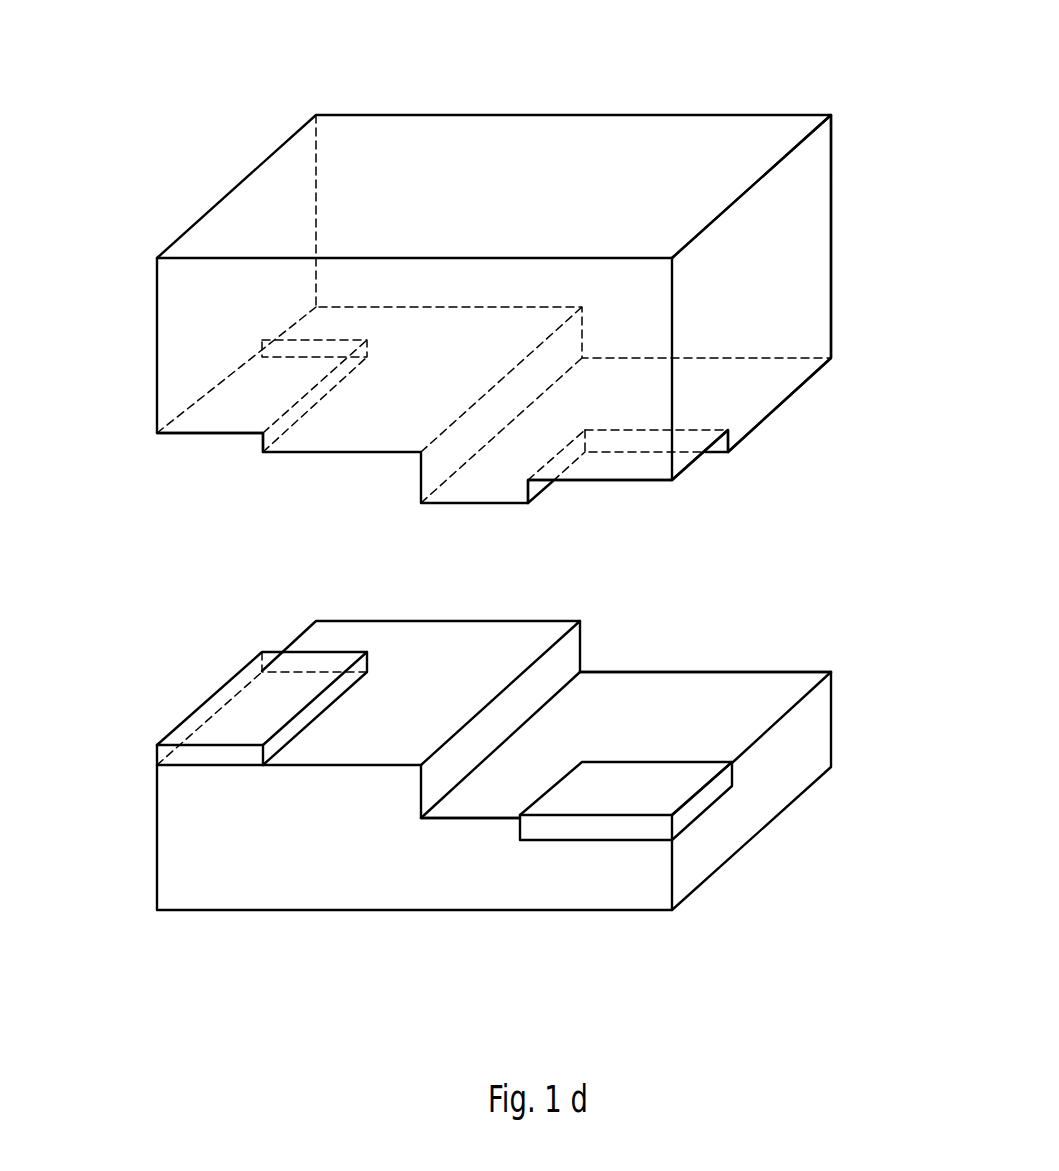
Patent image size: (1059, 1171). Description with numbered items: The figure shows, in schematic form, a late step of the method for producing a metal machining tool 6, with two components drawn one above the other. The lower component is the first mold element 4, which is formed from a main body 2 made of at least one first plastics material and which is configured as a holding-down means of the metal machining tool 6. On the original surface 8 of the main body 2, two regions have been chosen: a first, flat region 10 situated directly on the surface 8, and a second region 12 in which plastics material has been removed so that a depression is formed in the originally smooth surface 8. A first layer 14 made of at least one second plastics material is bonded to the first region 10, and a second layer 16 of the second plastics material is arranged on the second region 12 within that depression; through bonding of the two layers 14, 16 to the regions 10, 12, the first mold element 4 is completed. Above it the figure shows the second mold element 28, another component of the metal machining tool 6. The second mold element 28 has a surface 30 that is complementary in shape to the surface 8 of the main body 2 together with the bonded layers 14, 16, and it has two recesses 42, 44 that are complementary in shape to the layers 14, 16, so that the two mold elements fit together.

The main body 2 is at (565, 740).
The first mold element 4 is at (867, 721).
The metal machining tool 6 is at (506, 293).
The original surface 8 is at (625, 652).
The first region 10 is at (328, 670).
The second region 12 is at (703, 815).
The first layer 14 is at (212, 697).
The second layer 16 is at (655, 762).
The second mold element 28 is at (857, 210).
The surface 30 is at (780, 445).
The recess 42 is at (223, 442).
The recess 44 is at (585, 488).